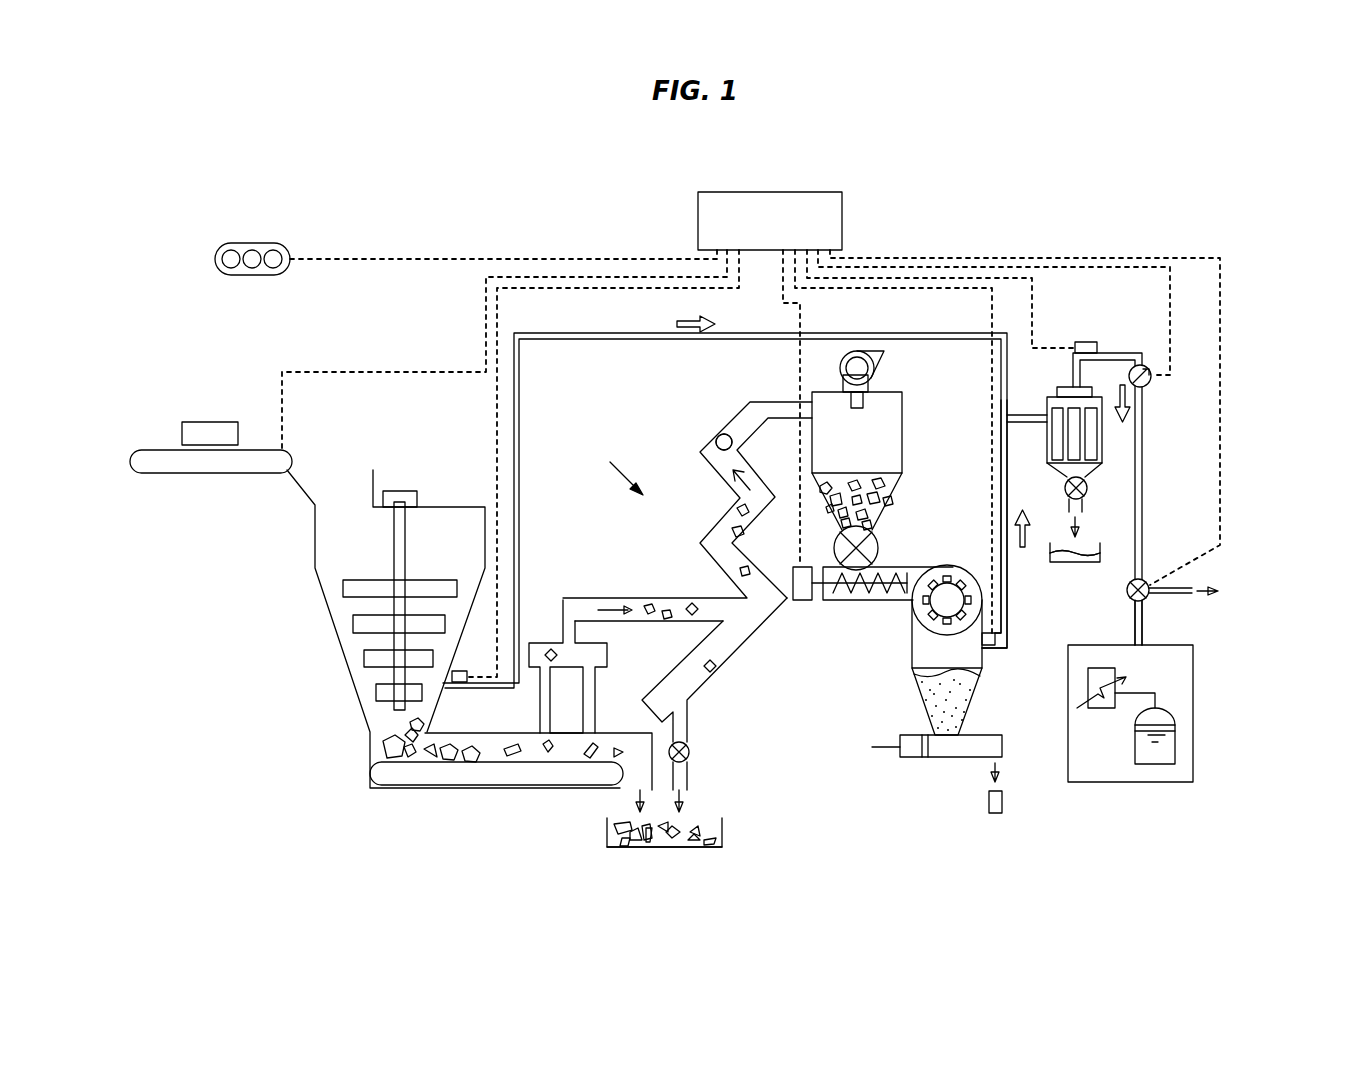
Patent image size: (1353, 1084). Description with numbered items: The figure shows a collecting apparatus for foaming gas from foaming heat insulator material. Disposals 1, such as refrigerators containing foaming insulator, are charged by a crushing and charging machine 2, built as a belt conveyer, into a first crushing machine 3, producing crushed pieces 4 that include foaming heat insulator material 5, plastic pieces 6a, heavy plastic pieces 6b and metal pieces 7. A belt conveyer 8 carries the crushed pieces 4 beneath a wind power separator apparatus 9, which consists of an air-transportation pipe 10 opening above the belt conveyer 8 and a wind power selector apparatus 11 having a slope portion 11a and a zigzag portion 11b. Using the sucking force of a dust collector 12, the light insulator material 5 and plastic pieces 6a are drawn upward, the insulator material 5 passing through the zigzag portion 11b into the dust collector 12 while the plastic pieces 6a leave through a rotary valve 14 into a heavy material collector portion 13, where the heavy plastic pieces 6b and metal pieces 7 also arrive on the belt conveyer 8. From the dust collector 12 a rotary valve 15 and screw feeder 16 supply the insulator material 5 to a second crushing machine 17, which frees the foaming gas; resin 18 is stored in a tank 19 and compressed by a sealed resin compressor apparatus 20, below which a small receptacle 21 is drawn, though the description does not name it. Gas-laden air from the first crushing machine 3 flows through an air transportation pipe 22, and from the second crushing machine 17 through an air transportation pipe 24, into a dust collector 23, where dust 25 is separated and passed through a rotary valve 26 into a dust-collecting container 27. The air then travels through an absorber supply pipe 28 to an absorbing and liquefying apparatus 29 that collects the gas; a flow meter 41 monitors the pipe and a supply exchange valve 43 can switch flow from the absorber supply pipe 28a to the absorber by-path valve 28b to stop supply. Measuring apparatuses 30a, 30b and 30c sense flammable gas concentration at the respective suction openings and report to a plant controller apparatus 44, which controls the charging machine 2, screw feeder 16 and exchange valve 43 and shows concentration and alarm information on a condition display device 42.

The disposals 1 is at (212, 424).
The crushing and charging machine 2 is at (200, 474).
The first crushing machine 3 is at (437, 509).
The crushed pieces 4 is at (390, 750).
The foaming heat insulator material 5 is at (724, 440).
The plastic pieces 6a is at (716, 672).
The heavy plastic pieces 6b is at (645, 848).
The metal pieces 7 is at (612, 848).
The belt conveyer 8 is at (482, 780).
The wind power separator apparatus 9 is at (616, 467).
The air-transportation pipe 10 is at (593, 605).
The wind power selector apparatus 11 is at (701, 530).
The slope portion 11a is at (768, 628).
The zigzag portion 11b is at (705, 532).
The dust collector 12 is at (902, 432).
The heavy material collector portion 13 is at (724, 826).
The rotary valve for discharging plastic 14 is at (690, 752).
The rotary valve 15 is at (876, 540).
The screw feeder 16 is at (855, 600).
The second crushing machine 17 is at (950, 580).
The resin 18 is at (935, 705).
The tank 19 is at (970, 706).
The resin compressor apparatus 20 is at (945, 757).
The collection box 21 is at (995, 813).
The air transportation pipe 22 is at (522, 378).
The dust collector 23 is at (1097, 442).
The air transportation pipe 24 is at (1008, 625).
The dust 25 is at (1065, 562).
The rotary valve 26 is at (1087, 490).
The dust-collecting container 27 is at (1085, 562).
The absorber supply pipe 28 is at (1142, 468).
The absorber supply pipe 28a is at (1145, 632).
The absorber by-path valve 28b is at (1190, 597).
The absorbing and liquefying apparatus 29 is at (1130, 782).
The measuring apparatus 30a is at (462, 684).
The measuring apparatus 30b is at (992, 648).
The measuring apparatus 30c is at (1085, 342).
The flow meter 41 is at (1152, 381).
The condition display device 42 is at (217, 257).
The supply exchange valve 43 is at (1150, 580).
The plant controller apparatus 44 is at (842, 223).